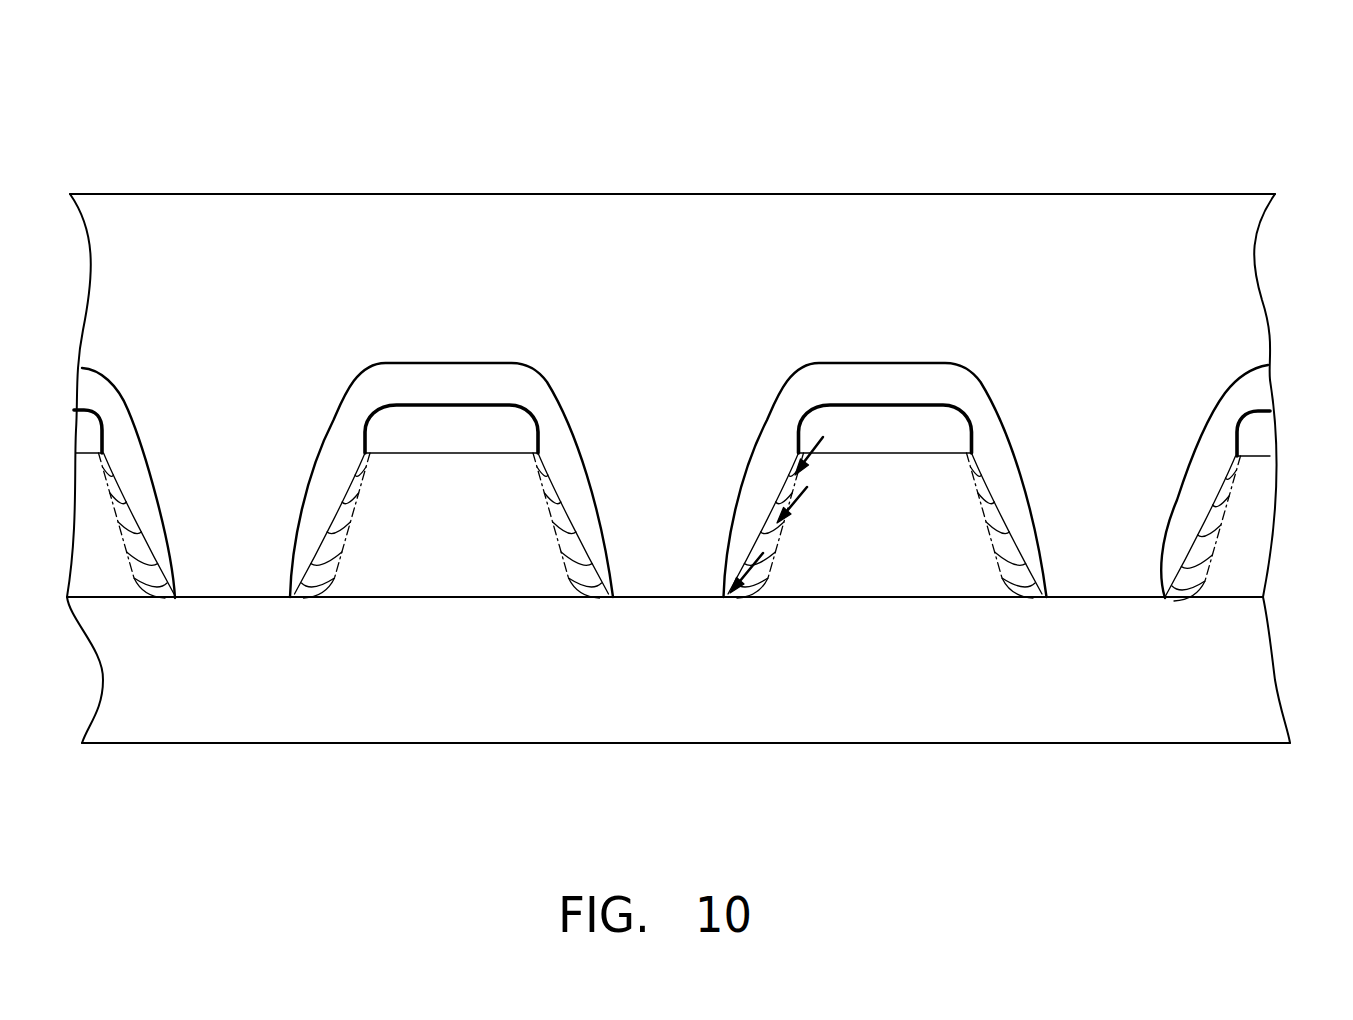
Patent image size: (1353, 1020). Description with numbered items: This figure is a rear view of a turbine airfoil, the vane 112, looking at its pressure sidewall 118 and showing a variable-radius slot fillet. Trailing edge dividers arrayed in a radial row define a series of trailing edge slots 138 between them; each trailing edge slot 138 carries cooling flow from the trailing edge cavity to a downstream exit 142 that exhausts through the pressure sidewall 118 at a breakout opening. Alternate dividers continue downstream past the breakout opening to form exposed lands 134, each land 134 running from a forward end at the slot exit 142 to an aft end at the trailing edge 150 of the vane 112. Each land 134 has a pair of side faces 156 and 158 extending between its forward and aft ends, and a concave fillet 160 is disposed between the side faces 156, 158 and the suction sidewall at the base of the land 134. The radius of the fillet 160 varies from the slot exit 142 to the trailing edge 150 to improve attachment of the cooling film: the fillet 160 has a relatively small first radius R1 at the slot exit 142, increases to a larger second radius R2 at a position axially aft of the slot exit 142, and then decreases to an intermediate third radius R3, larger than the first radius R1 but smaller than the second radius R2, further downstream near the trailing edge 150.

The vane 112 is at (1165, 150).
The pressure sidewall 118 is at (1235, 283).
The land 134 is at (262, 506).
The trailing edge slot 138 is at (518, 345).
The downstream exit 142 is at (392, 412).
The trailing edge 150 is at (1060, 701).
The side face 156 is at (568, 457).
The side face 158 is at (335, 460).
The concave fillet 160 is at (340, 536).
The first radius R1 is at (823, 441).
The second radius R2 is at (806, 488).
The third radius R3 is at (762, 557).